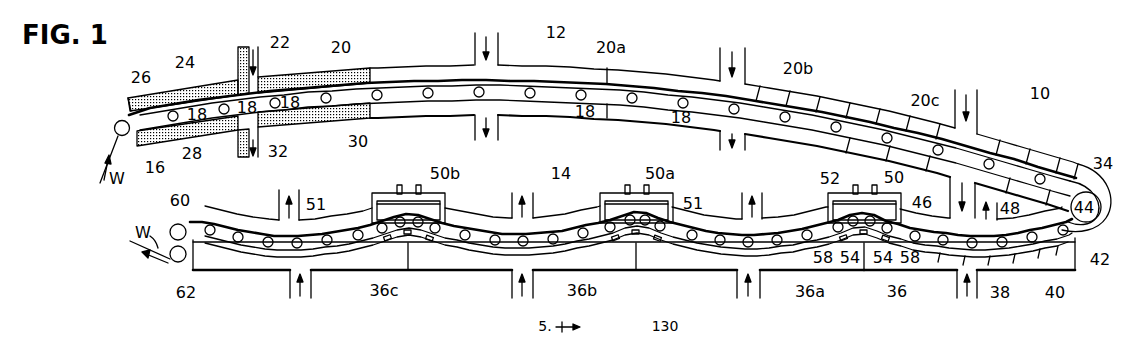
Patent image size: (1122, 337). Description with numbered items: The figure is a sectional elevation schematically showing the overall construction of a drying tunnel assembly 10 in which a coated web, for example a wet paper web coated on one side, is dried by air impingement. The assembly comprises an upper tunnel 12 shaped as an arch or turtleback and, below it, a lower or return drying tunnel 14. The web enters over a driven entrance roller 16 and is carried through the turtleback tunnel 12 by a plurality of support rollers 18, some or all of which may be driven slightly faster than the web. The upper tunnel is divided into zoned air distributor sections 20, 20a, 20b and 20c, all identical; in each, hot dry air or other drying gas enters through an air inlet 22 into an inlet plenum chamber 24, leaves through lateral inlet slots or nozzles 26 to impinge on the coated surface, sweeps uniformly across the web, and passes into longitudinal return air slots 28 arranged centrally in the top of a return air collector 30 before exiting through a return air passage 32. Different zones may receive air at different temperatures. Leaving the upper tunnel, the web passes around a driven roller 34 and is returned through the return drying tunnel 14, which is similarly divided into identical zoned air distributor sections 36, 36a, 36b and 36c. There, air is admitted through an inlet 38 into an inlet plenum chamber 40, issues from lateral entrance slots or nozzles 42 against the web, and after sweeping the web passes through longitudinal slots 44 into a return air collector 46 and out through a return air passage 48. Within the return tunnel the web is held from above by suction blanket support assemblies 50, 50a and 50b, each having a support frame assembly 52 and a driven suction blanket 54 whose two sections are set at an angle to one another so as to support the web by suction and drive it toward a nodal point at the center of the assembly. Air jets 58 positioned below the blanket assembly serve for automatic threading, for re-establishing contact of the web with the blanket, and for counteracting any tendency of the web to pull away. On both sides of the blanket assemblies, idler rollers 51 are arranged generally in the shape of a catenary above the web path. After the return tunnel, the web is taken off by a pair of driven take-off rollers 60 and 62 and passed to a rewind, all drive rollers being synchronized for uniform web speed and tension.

The drying tunnel assembly 10 is at (1053, 95).
The upper tunnel 12 is at (566, 30).
The return drying tunnel 14 is at (571, 178).
The driven entrance roller 16 is at (128, 140).
The support rollers 18 is at (690, 113).
The zoned air distributor section 20 is at (356, 70).
The zoned air distributor section 20a is at (600, 75).
The zoned air distributor section 20b is at (804, 90).
The zoned air distributor section 20c is at (931, 120).
The air inlet 22 is at (258, 56).
The inlet plenum chamber 24 is at (190, 91).
The lateral inlet slots or nozzles 26 is at (162, 108).
The longitudinal return air slots 28 is at (170, 124).
The return air collector 30 is at (354, 113).
The return air passage 32 is at (259, 142).
The driven roller 34 is at (1074, 190).
The zoned air distributor section 36 is at (905, 271).
The zoned air distributor section 36a is at (792, 271).
The zoned air distributor section 36b is at (576, 271).
The zoned air distributor section 36c is at (376, 271).
The inlet 38 is at (978, 288).
The inlet plenum chamber 40 is at (1044, 262).
The lateral entrance slots or nozzles 42 is at (1078, 259).
The longitudinal slots 44 is at (1086, 207).
The return air collector 46 is at (936, 226).
The return air passage 48 is at (990, 211).
The suction blanket support assembly 50 is at (905, 179).
The suction blanket support assembly 50a is at (676, 176).
The suction blanket support assembly 50b is at (461, 176).
The idler rollers 51 is at (716, 233).
The support frame assembly 52 is at (842, 195).
The driven suction blanket 54 is at (880, 252).
The air jets 58 is at (903, 254).
The driven take-off roller 60 is at (176, 224).
The driven take-off roller 62 is at (174, 263).